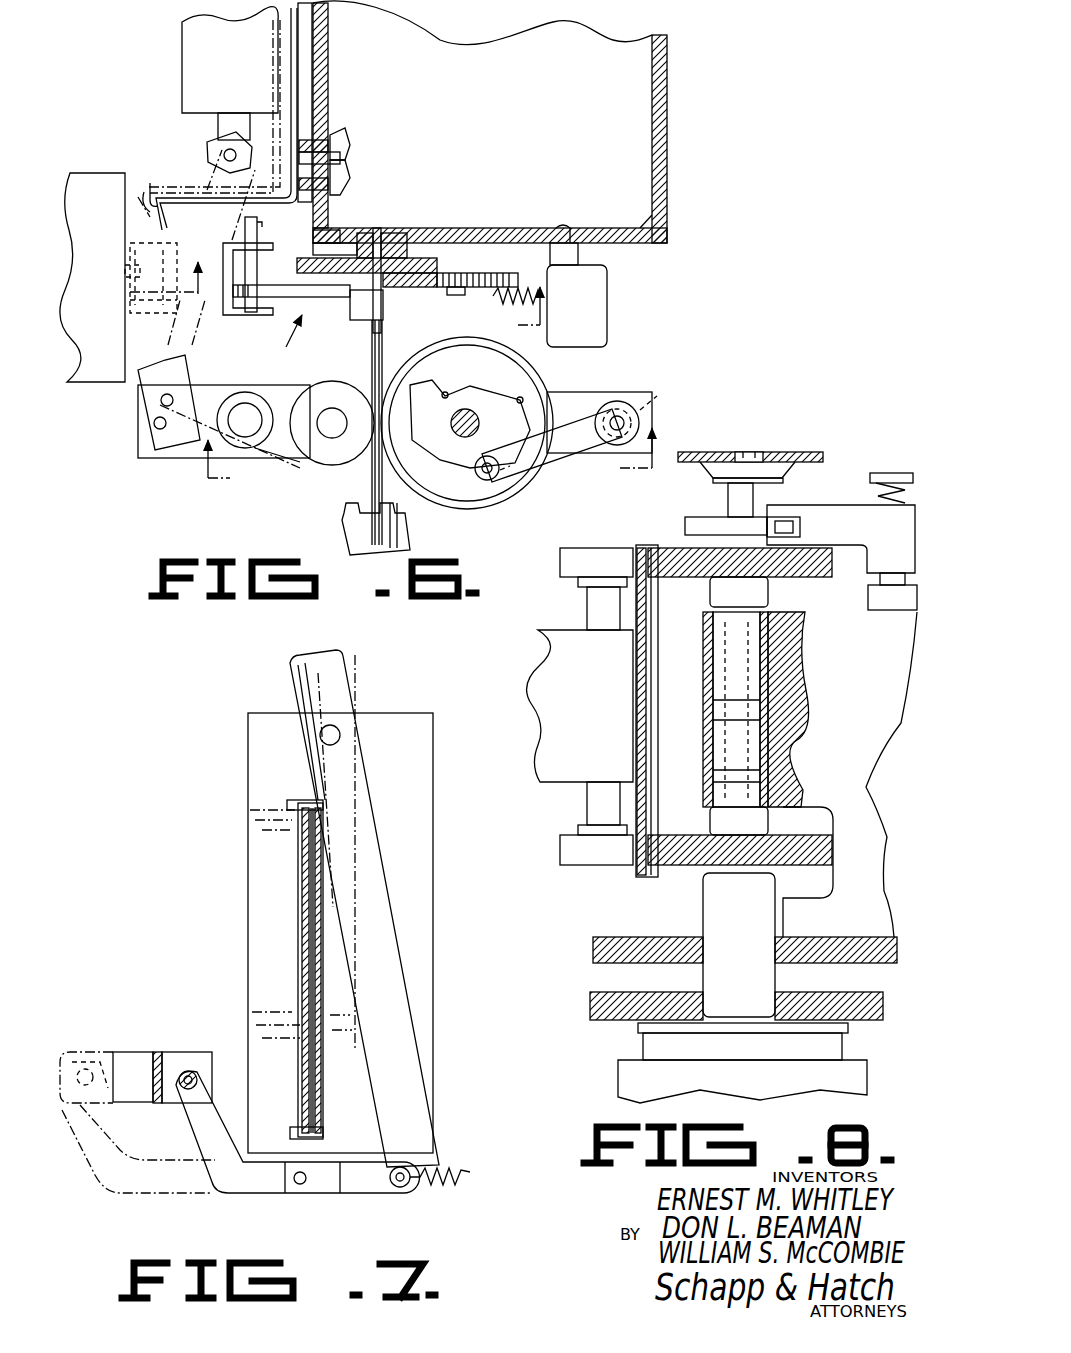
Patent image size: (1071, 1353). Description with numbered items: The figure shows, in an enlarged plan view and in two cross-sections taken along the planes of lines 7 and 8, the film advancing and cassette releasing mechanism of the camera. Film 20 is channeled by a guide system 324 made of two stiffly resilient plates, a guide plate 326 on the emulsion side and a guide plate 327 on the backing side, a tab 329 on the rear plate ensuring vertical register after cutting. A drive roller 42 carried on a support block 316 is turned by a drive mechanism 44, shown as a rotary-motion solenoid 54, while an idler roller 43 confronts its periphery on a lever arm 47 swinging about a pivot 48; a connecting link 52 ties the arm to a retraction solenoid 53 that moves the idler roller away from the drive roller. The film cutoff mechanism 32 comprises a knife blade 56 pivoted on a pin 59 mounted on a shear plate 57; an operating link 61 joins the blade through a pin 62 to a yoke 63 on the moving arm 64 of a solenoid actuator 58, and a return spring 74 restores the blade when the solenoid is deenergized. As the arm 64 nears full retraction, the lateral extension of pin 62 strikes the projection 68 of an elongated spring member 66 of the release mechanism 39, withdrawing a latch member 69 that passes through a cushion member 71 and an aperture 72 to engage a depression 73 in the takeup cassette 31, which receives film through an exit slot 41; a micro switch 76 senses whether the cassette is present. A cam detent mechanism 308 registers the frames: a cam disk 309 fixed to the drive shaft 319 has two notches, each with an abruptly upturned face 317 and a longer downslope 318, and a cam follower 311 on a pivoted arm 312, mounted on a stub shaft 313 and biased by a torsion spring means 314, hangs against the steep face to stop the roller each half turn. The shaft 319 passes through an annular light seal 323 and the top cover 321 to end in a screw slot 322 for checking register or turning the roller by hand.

In FIG. 6, the section lines 7— 7 is at (345, 296).
In FIG. 6, the section lines 8— 8 is at (428, 461).
In FIG. 6, the film 20 is at (406, 536).
In FIG. 8, the film 20 is at (648, 650).
In FIG. 6, the takeup cassette 31 is at (473, 48).
In FIG. 6, the film cutoff mechanism 32 is at (280, 343).
In FIG. 6, the release mechanism 39 is at (312, 108).
In FIG. 6, the exit slot 41 is at (378, 232).
In FIG. 6, the drive roller 42 is at (450, 510).
In FIG. 8, the drive roller 42 is at (700, 578).
In FIG. 6, the idler roller 43 is at (310, 454).
In FIG. 8, the idler roller 43 is at (570, 578).
In FIG. 8, the drive mechanism 44 is at (628, 1032).
In FIG. 6, the lever arm 47 is at (273, 452).
In FIG. 8, the lever arm 47 is at (560, 775).
In FIG. 6, the pivot 48 is at (246, 436).
In FIG. 6, the connecting link 52 is at (147, 402).
In FIG. 6, the retraction solenoid 53 is at (182, 40).
In FIG. 8, the rotary-motion solenoid 54 is at (618, 1080).
In FIG. 6, the knife blade 56 is at (455, 292).
In FIG. 7, the knife blade 56 is at (378, 888).
In FIG. 6, the shear plate 57 is at (305, 266).
In FIG. 7, the shear plate 57 is at (260, 927).
In FIG. 6, the solenoid actuator 58 is at (88, 185).
In FIG. 7, the pin 59 is at (338, 733).
In FIG. 6, the operating link 61 is at (282, 298).
In FIG. 7, the operating link 61 is at (250, 1194).
In FIG. 6, the pin 62 is at (257, 233).
In FIG. 7, the pin 62 is at (184, 1090).
In FIG. 6, the yoke 63 is at (225, 252).
In FIG. 7, the yoke 63 is at (160, 1052).
In FIG. 6, the moving arm 64 is at (140, 268).
In FIG. 7, the moving arm 64 is at (127, 1052).
In FIG. 6, the spring member 66 is at (290, 48).
In FIG. 6, the projection 68 is at (150, 195).
In FIG. 6, the latch member 69 is at (338, 176).
In FIG. 6, the cushion member 71 is at (314, 138).
In FIG. 6, the aperture 72 is at (342, 147).
In FIG. 6, the depression 73 is at (346, 158).
In FIG. 6, the return spring 74 is at (500, 300).
In FIG. 7, the return spring 74 is at (455, 1186).
In FIG. 6, the micro switch 76 is at (603, 292).
In FIG. 8, the cam detent mechanism 308 is at (820, 478).
In FIG. 6, the cam disk 309 is at (440, 444).
In FIG. 8, the cam disk 309 is at (685, 526).
In FIG. 6, the cam follower 311 is at (493, 481).
In FIG. 8, the cam follower 311 is at (795, 526).
In FIG. 6, the pivoted arm 312 is at (552, 460).
In FIG. 8, the pivoted arm 312 is at (838, 488).
In FIG. 6, the stub shaft 313 is at (617, 408).
In FIG. 8, the stub shaft 313 is at (892, 573).
In FIG. 6, the spring means 314 is at (657, 396).
In FIG. 8, the spring means 314 is at (893, 478).
In FIG. 6, the support block 316 is at (568, 393).
In FIG. 8, the support block 316 is at (833, 600).
In FIG. 6, the upturned face 317 is at (443, 385).
In FIG. 6, the downslope 318 is at (467, 382).
In FIG. 8, the shaft 319 is at (745, 500).
In FIG. 8, the top cover 321 is at (786, 452).
In FIG. 8, the screw slot 322 is at (751, 452).
In FIG. 8, the annular light seal 323 is at (713, 481).
In FIG. 6, the guide system 324 is at (358, 495).
In FIG. 6, the guide plate 326 is at (364, 338).
In FIG. 8, the guide plate 326 is at (638, 730).
In FIG. 7, the guide plate 326 is at (305, 1072).
In FIG. 6, the guide plate 327 is at (389, 333).
In FIG. 8, the guide plate 327 is at (660, 748).
In FIG. 7, the guide plate 327 is at (330, 980).
In FIG. 6, the tab 329 is at (352, 313).
In FIG. 7, the tab 329 is at (295, 802).